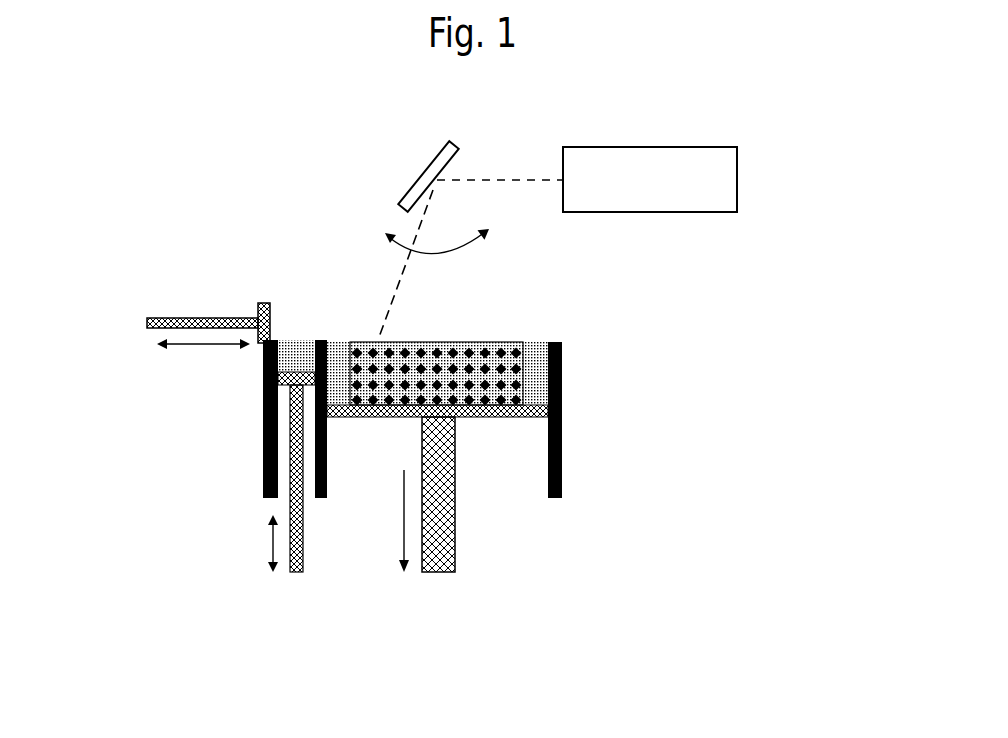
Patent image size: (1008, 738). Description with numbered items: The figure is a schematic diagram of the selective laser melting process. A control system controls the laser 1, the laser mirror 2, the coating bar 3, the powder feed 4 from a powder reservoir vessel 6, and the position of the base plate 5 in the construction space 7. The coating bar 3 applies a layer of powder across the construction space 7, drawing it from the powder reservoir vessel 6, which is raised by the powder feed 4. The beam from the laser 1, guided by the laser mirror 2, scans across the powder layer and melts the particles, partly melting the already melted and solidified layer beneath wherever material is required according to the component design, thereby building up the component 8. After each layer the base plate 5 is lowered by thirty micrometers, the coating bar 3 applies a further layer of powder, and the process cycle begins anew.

The laser 1 is at (703, 178).
The laser mirror 2 is at (403, 203).
The coating bar 3 is at (172, 317).
The powder feed 4 is at (300, 572).
The base plate 5 is at (455, 560).
The powder reservoir vessel 6 is at (298, 345).
The construction space 7 is at (563, 357).
The component 8 is at (502, 342).